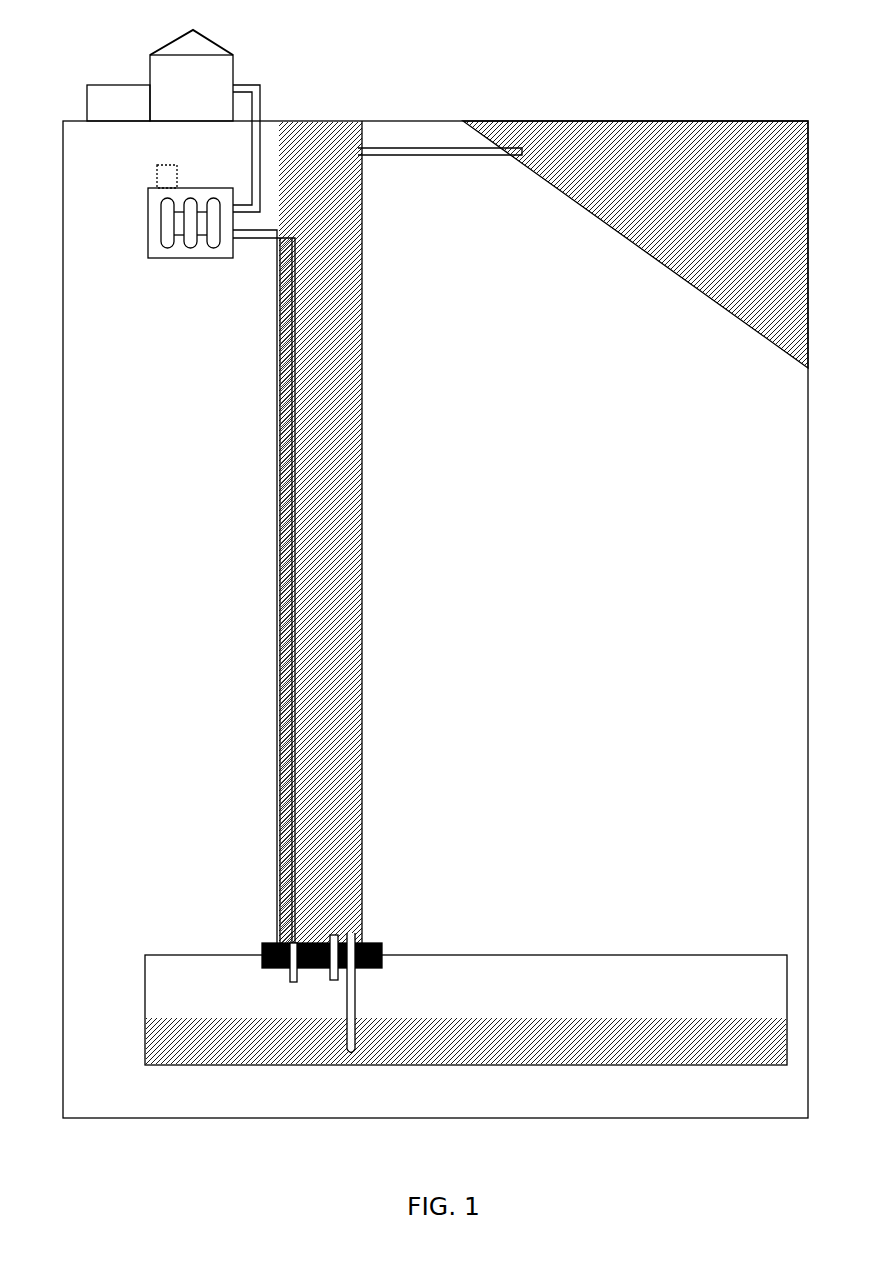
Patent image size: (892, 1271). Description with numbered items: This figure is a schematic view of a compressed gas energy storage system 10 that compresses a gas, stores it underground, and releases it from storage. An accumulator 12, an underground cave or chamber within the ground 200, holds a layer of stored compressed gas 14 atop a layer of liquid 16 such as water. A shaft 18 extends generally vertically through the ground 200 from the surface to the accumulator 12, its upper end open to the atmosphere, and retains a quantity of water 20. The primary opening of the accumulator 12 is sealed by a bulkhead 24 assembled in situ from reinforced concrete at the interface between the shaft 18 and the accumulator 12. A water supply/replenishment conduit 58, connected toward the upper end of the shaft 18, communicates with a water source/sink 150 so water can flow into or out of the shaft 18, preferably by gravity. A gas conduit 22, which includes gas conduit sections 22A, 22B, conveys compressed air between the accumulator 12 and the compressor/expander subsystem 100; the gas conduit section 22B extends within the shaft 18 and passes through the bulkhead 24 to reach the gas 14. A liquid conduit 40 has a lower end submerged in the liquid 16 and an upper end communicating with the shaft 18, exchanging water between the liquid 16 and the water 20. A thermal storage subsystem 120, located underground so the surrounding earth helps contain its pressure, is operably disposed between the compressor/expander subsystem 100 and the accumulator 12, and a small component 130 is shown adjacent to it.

The compressed gas energy storage system 10 is at (531, 71).
The accumulator 12 is at (145, 955).
The layer of stored compressed gas 14 is at (152, 1003).
The layer of liquid 16 is at (150, 1048).
The shaft 18 is at (277, 478).
The water 20 is at (283, 530).
The gas conduit 22 is at (290, 392).
The gas conduit section 22A is at (261, 95).
The gas conduit section 22B is at (292, 588).
The bulkhead 24 is at (265, 940).
The liquid conduit 40 is at (354, 1040).
The water supply/replenishment conduit 58 is at (455, 157).
The compressor/expander subsystem 100 is at (242, 50).
The thermal storage subsystem 120 is at (149, 188).
The sensor 130 is at (172, 175).
The water source/sink 150 is at (663, 130).
The ground 200 is at (585, 532).